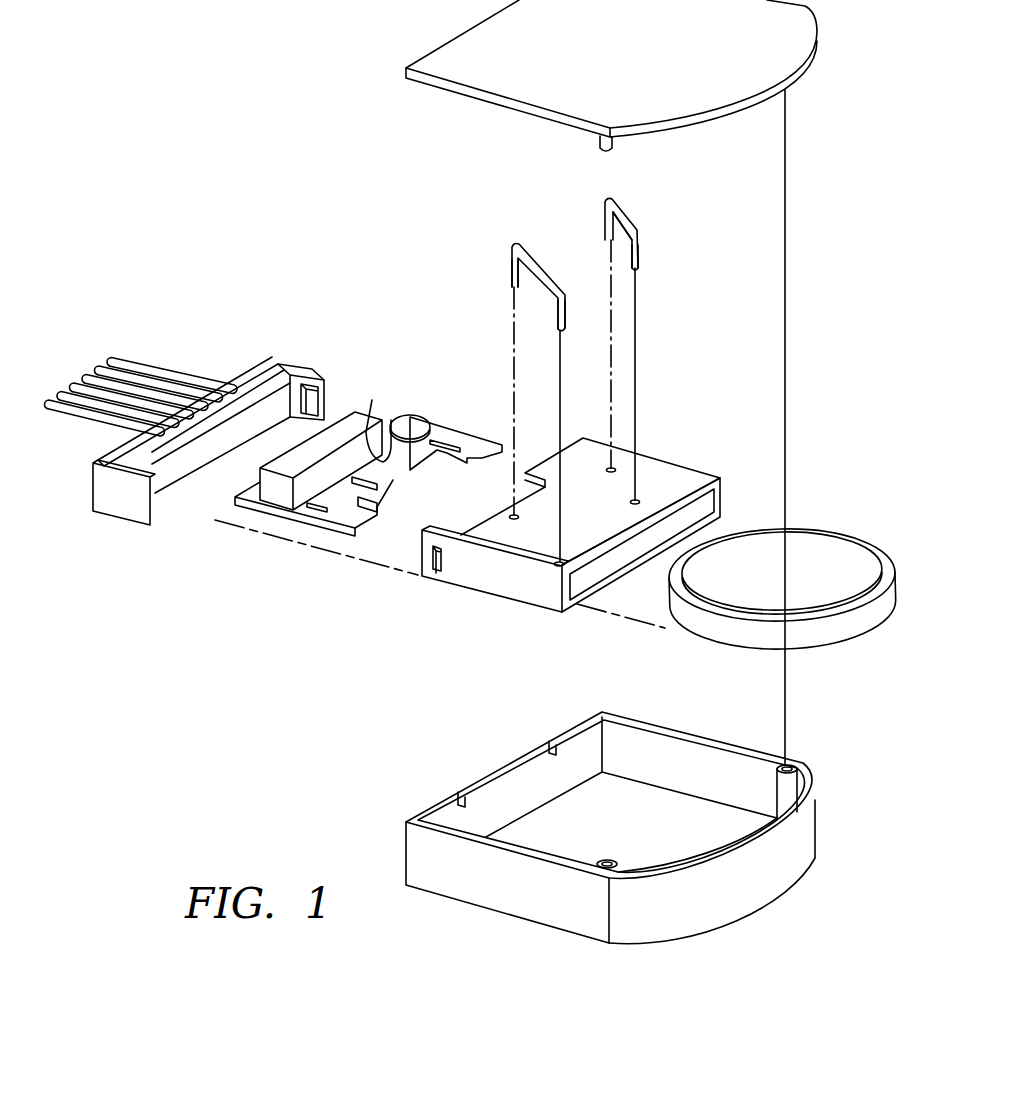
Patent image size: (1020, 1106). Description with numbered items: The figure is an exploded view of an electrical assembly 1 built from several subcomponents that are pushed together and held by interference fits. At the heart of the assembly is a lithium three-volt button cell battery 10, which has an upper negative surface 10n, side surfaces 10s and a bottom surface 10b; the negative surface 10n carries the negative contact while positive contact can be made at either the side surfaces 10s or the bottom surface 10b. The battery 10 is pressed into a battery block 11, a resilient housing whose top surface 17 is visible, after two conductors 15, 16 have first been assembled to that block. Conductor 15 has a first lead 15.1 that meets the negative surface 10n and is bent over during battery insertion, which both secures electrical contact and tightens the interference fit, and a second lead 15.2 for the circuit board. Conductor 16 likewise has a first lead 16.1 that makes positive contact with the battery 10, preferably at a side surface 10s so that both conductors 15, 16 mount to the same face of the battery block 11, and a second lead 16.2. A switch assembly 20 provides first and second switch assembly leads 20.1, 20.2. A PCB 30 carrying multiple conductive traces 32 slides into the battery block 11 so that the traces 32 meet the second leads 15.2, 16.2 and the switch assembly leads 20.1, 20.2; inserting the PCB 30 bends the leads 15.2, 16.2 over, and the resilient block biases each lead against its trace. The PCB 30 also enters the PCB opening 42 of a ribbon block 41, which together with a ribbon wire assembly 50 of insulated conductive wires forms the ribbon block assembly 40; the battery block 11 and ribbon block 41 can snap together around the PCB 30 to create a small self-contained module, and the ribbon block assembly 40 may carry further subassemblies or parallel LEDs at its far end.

The electrical assembly 1 is at (372, 655).
The battery 10 is at (818, 528).
The negative surface 10n is at (758, 558).
The side surface 10s is at (725, 632).
The bottom surface 10b is at (847, 630).
The battery block 11 is at (688, 467).
The conductor 15 is at (629, 217).
The first lead 15.1 is at (640, 259).
The second lead 15.2 is at (639, 236).
The conductor 16 is at (541, 268).
The first lead 16.1 is at (556, 330).
The second lead 16.2 is at (511, 283).
The top surface 17 is at (525, 548).
The switch assembly 20 is at (282, 488).
The first switch assembly lead 20.1 is at (320, 512).
The second switch assembly lead 20.2 is at (387, 416).
The PCB 30 is at (443, 427).
The conductive traces 32 is at (465, 447).
The ribbon block assembly 40 is at (290, 366).
The ribbon block 41 is at (107, 500).
The PCB opening 42 is at (190, 483).
The ribbon wire assembly 50 is at (157, 373).